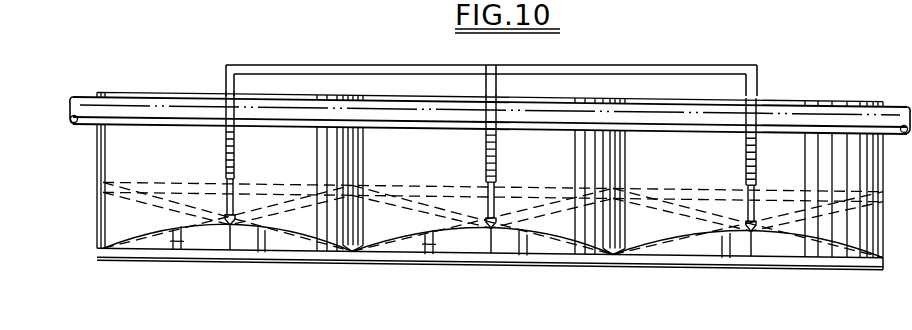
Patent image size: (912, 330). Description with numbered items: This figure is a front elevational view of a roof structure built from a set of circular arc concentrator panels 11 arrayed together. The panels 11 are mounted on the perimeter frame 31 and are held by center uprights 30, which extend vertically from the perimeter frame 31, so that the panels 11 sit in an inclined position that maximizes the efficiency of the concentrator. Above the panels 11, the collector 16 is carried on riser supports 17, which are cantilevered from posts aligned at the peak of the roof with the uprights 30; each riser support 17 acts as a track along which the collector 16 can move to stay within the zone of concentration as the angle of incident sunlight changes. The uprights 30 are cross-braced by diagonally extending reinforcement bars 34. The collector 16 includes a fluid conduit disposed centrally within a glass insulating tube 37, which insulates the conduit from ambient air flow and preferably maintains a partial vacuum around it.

The circular arc concentrator panel 11 is at (118, 156).
The collector 16 is at (805, 122).
The riser support 17 is at (237, 159).
The center upright 30 is at (497, 86).
The perimeter frame 31 is at (97, 260).
The reinforcement bar 34 is at (176, 203).
The glass insulating tube 37 is at (146, 105).